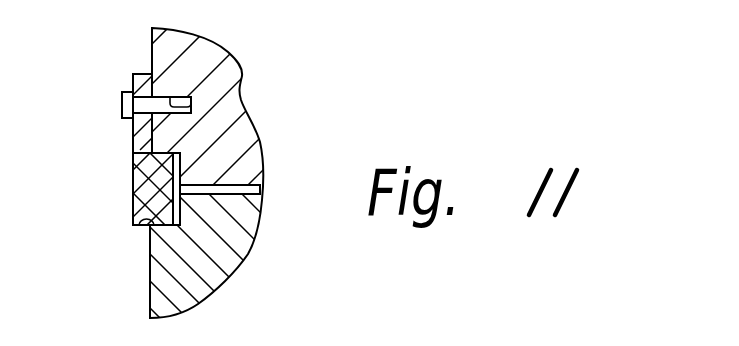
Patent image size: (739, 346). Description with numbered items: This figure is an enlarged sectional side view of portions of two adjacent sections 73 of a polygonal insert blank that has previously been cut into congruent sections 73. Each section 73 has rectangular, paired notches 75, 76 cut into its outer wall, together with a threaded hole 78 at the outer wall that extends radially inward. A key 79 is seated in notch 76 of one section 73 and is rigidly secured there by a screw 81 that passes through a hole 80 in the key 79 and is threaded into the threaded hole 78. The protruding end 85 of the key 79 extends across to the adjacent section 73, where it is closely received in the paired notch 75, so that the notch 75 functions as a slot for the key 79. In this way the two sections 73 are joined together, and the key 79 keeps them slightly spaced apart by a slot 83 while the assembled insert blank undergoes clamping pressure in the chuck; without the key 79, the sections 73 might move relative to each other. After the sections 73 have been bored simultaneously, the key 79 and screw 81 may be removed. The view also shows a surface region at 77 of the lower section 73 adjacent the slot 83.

The section 73 is at (245, 122).
The notch 75 is at (139, 226).
The notch 76 is at (158, 162).
The wall 77 is at (150, 295).
The threaded hole 78 is at (185, 98).
The key 79 is at (109, 195).
The hole 80 is at (138, 100).
The screw 81 is at (122, 104).
The slot 83 is at (260, 189).
The protruding end 85 is at (160, 188).